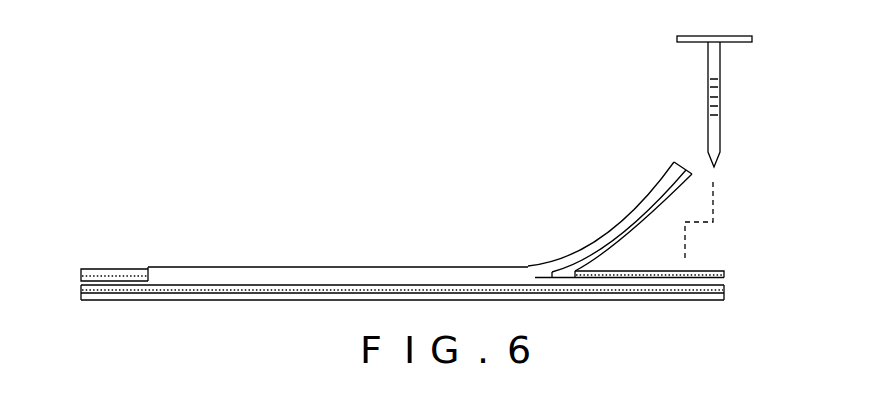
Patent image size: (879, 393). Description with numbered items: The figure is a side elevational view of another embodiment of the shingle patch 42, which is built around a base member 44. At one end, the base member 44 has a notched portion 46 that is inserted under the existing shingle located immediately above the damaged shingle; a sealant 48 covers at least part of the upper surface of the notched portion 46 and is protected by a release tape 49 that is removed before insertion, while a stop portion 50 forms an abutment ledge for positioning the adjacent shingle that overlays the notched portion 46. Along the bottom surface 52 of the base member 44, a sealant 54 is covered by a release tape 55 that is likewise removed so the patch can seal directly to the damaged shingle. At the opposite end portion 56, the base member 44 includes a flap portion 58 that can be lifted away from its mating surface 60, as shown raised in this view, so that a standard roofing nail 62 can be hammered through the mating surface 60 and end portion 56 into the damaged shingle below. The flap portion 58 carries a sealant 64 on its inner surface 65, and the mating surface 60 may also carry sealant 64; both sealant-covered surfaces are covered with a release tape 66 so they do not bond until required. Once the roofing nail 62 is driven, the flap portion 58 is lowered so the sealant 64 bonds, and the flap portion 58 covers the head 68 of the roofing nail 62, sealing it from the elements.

The shingle patch 42 is at (358, 226).
The base member 44 is at (287, 267).
The notched portion 46 is at (80, 286).
The sealant 48 is at (80, 278).
The release tape 49 is at (100, 269).
The stop portion 50 is at (139, 266).
The bottom surface 52 is at (447, 287).
The sealant 54 is at (724, 293).
The release tape 55 is at (222, 297).
The end portion 56 is at (719, 285).
The flap portion 58 is at (638, 203).
The mating surface 60 is at (653, 280).
The roofing nail 62 is at (721, 50).
The sealant 64 is at (689, 168).
The inner surface 65 is at (600, 250).
The release tape 66 is at (695, 175).
The head 68 is at (723, 35).